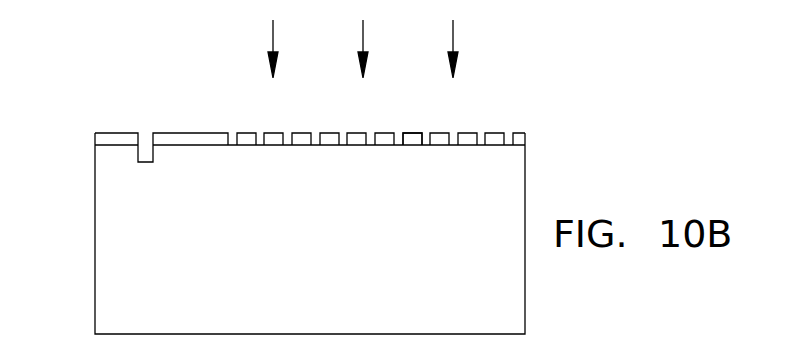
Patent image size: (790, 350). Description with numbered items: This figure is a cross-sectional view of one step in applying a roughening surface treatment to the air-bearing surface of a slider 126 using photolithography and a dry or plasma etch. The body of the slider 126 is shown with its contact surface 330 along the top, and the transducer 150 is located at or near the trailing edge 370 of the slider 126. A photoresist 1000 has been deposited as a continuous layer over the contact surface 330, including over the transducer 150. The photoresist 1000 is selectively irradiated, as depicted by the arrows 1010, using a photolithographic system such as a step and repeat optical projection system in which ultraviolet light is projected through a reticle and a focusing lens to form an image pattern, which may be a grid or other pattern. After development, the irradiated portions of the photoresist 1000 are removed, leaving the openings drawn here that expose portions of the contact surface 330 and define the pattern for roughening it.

The slider 126 is at (101, 281).
The trailing edge 370 is at (95, 196).
The transducer 150 is at (147, 145).
The photoresist 1000 is at (248, 140).
The contact surface 330 is at (397, 143).
The arrows 1010 is at (453, 35).